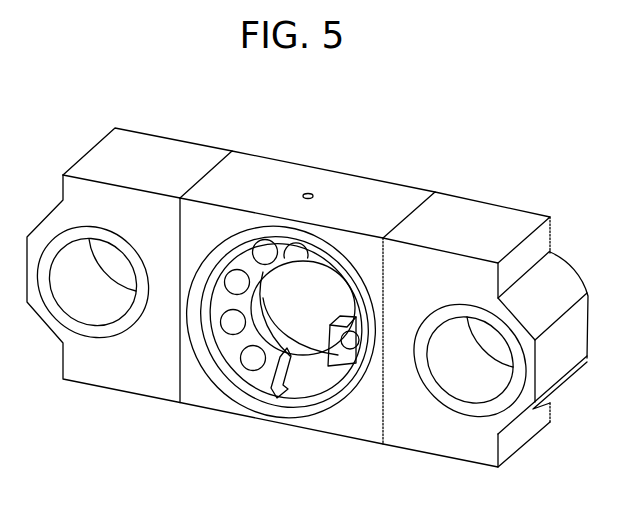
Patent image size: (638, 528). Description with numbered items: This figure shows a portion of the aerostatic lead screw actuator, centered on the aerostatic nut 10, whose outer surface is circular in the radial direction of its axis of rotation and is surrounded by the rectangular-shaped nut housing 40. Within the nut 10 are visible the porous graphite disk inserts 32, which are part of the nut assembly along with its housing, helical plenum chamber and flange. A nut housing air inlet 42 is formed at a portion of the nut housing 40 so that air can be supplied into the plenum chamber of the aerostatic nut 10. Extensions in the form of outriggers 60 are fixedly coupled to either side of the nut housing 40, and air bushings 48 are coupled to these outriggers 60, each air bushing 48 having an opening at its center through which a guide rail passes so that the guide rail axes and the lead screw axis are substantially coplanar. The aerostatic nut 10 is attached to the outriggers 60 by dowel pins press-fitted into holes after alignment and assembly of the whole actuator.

The aerostatic nut 10 is at (307, 382).
The porous graphite disk inserts 32 is at (250, 357).
The nut housing 40 is at (383, 195).
The nut housing air inlet 42 is at (308, 192).
The air bushings 48 is at (102, 330).
The outriggers 60 is at (148, 157).